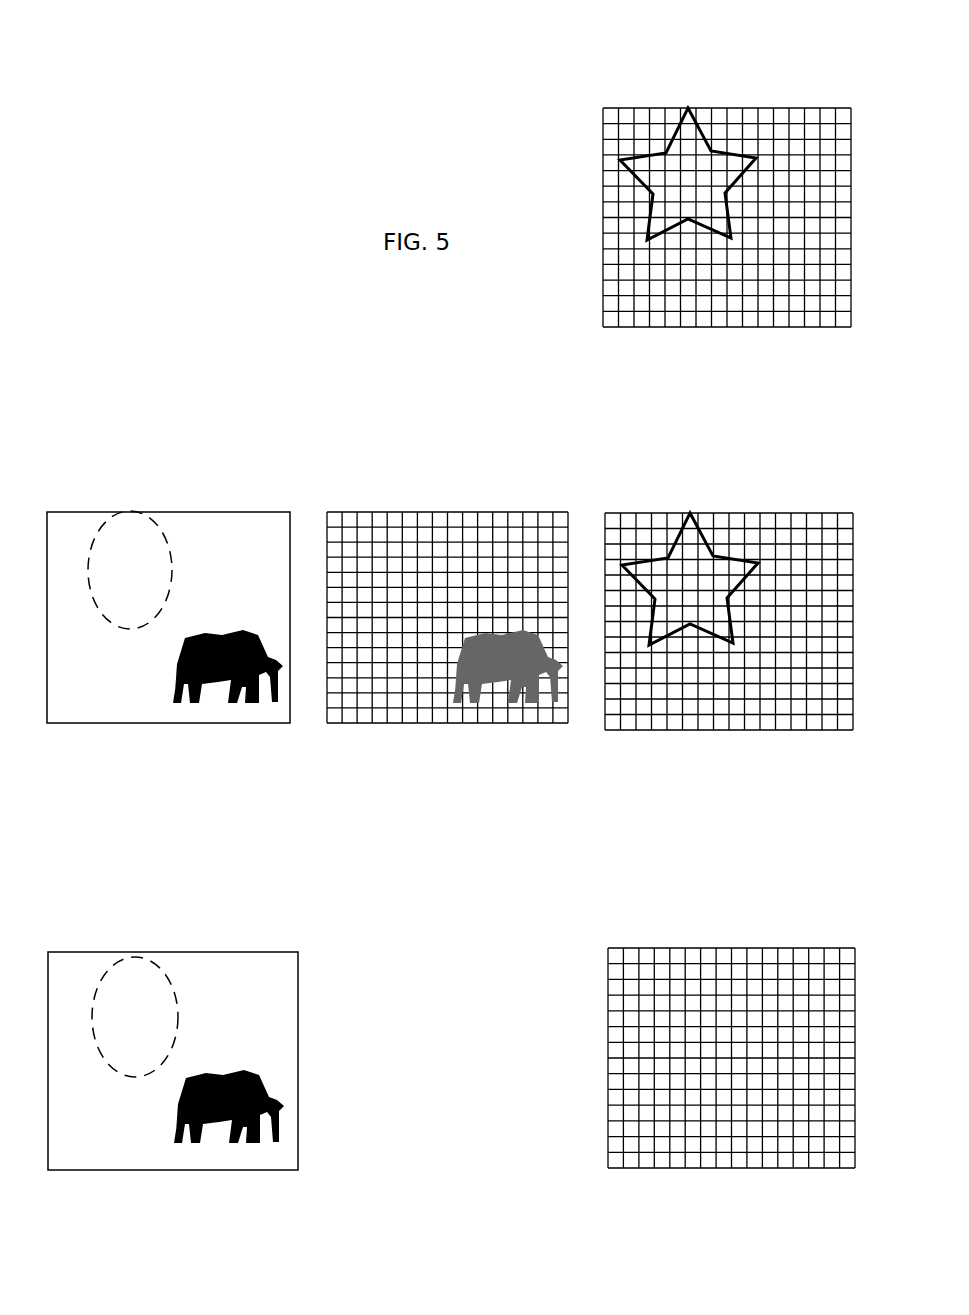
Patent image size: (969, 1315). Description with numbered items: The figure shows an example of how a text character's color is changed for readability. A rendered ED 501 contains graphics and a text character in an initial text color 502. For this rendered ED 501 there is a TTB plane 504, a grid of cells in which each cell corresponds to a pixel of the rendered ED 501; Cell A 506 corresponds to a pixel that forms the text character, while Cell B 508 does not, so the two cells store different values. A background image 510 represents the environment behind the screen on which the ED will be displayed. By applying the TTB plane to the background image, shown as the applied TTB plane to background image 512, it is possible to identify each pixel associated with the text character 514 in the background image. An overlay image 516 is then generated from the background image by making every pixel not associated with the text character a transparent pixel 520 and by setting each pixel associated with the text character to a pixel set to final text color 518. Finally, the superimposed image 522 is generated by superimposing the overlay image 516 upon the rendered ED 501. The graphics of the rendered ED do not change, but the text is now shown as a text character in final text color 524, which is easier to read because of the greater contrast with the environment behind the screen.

The rendered ED 501 is at (290, 503).
The text character in initial text color 502 is at (136, 629).
The TTB plane 504 is at (568, 503).
The Cell A 506 is at (425, 580).
The Cell B 508 is at (470, 655).
The background image 510 is at (603, 105).
The applied TTB plane to background image 512 is at (853, 508).
The pixel associated with text character 514 is at (705, 582).
The overlay image 516 is at (855, 940).
The pixel set to final text color 518 is at (703, 1020).
The transparent pixel 520 is at (802, 1112).
The superimposed image 522 is at (48, 943).
The text character in final text color 524 is at (162, 965).